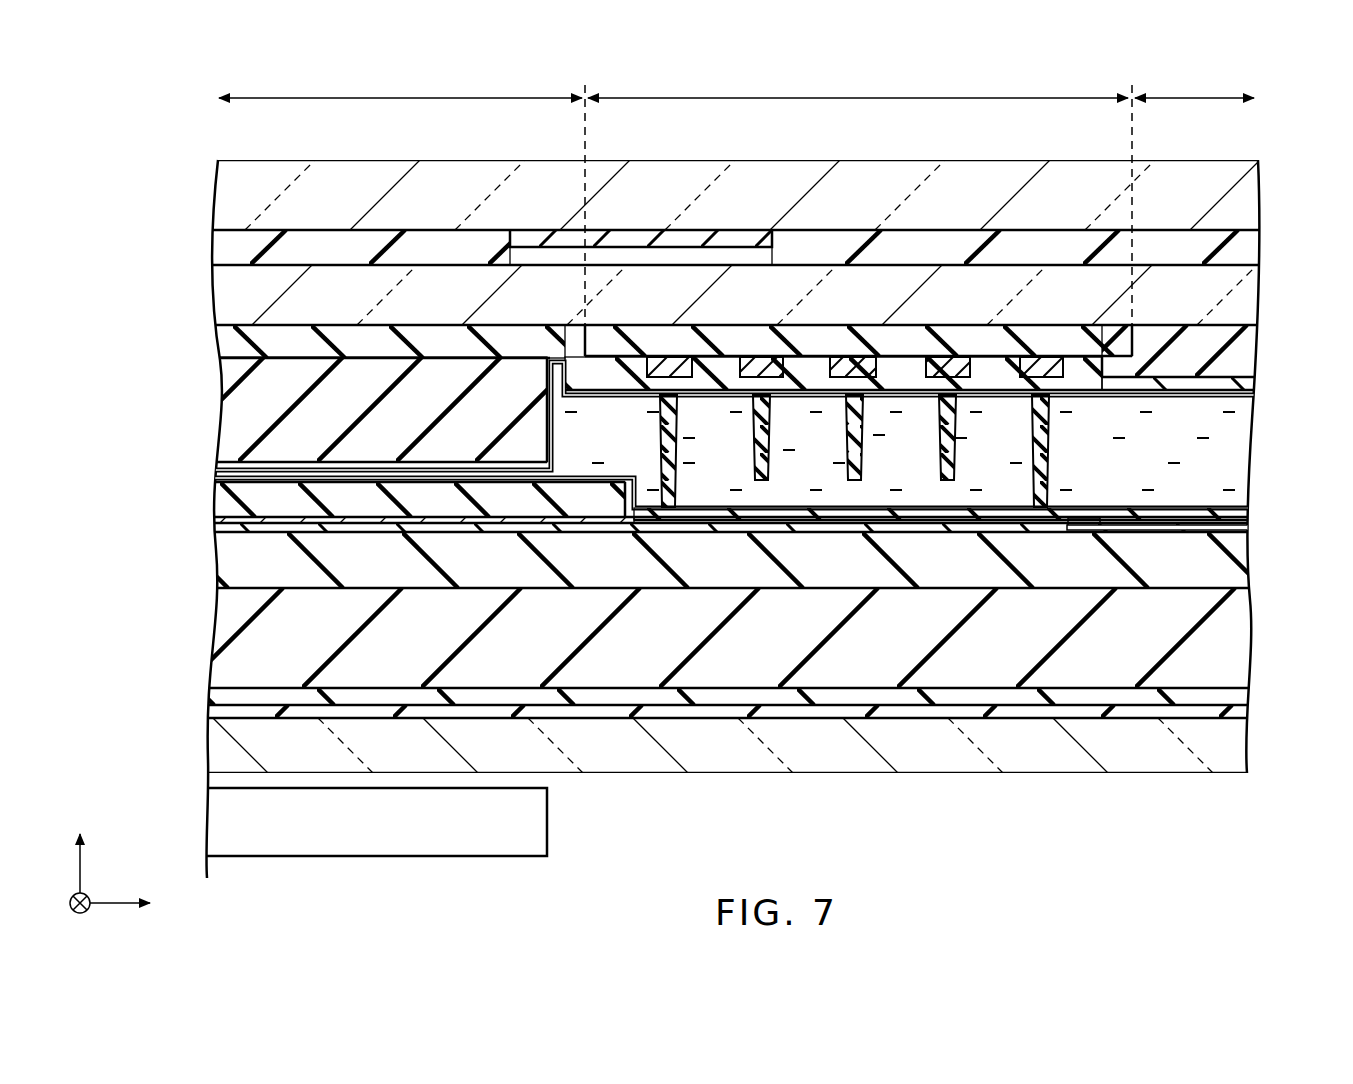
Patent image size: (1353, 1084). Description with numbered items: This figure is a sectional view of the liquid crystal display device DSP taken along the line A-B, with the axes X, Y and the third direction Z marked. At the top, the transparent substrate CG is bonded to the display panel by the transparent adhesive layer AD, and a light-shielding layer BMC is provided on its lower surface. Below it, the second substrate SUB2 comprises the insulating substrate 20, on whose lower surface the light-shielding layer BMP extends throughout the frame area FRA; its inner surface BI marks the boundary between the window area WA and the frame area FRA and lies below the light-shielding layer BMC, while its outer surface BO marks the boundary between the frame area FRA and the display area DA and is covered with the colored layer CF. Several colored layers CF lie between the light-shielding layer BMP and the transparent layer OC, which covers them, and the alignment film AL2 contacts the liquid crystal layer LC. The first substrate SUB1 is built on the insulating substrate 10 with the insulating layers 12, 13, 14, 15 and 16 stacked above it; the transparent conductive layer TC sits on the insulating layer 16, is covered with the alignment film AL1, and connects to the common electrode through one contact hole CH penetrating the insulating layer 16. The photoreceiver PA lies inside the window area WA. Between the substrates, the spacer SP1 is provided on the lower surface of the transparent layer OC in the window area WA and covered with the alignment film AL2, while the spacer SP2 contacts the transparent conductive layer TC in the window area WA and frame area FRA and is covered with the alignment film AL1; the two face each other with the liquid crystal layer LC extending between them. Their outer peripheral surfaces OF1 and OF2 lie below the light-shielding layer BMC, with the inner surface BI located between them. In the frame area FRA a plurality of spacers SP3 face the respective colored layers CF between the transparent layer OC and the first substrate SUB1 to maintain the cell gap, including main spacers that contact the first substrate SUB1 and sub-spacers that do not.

The liquid crystal display device DSP is at (106, 152).
The transparent substrate CG is at (215, 196).
The transparent adhesive layer AD is at (215, 251).
The second substrate SUB2 is at (157, 316).
The insulating substrate 20 is at (223, 298).
The transparent layer OC is at (223, 341).
The spacer SP1 is at (215, 392).
The alignment film AL2 is at (216, 469).
The alignment film AL1 is at (216, 477).
The spacer SP2 is at (215, 498).
The transparent conductive layer TC is at (215, 519).
The insulating layer 16 is at (215, 529).
The insulating layer 15 is at (216, 560).
The first substrate SUB1 is at (152, 618).
The insulating layer 14 is at (216, 642).
The insulating layer 13 is at (216, 697).
The insulating layer 12 is at (216, 711).
The insulating substrate 10 is at (216, 745).
The photoreceiver PA is at (216, 825).
The window area WA is at (402, 198).
The frame area FRA is at (860, 198).
The display area DA is at (1194, 85).
The inner surface BI is at (577, 332).
The light-shielding layer BMC is at (683, 240).
The light-shielding layer BMP is at (828, 340).
The outer surface BO is at (1137, 337).
The colored layer CF is at (765, 379).
The spacers SP3 is at (660, 437).
The liquid crystal layer LC is at (1249, 445).
The contact hole CH is at (1087, 516).
The outer peripheral surface OF1 is at (557, 447).
The outer peripheral surface OF2 is at (642, 507).
The section line end point A is at (213, 899).
The section line end point B is at (1253, 809).
The X direction X is at (132, 904).
The Y direction Y is at (68, 912).
The third direction Z is at (80, 848).